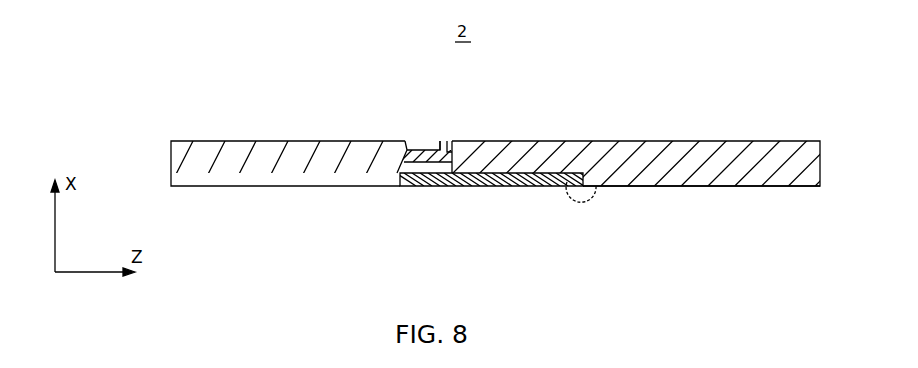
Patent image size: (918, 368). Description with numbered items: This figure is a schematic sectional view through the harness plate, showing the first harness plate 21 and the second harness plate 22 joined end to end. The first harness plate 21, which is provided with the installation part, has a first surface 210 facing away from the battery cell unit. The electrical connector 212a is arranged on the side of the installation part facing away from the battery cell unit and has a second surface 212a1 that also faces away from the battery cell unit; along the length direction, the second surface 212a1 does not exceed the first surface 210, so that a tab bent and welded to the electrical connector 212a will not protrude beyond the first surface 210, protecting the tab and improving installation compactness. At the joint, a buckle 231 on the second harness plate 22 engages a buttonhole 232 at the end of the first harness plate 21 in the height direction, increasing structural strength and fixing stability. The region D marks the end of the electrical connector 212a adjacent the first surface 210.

The first harness plate 21 is at (707, 186).
The second harness plate 22 is at (292, 186).
The first surface 210 is at (633, 186).
The electrical connector 212a is at (433, 186).
The second surface 212a1 is at (512, 186).
The buckle 231 is at (437, 141).
The buttonhole 232 is at (447, 141).
The detail region D is at (573, 197).